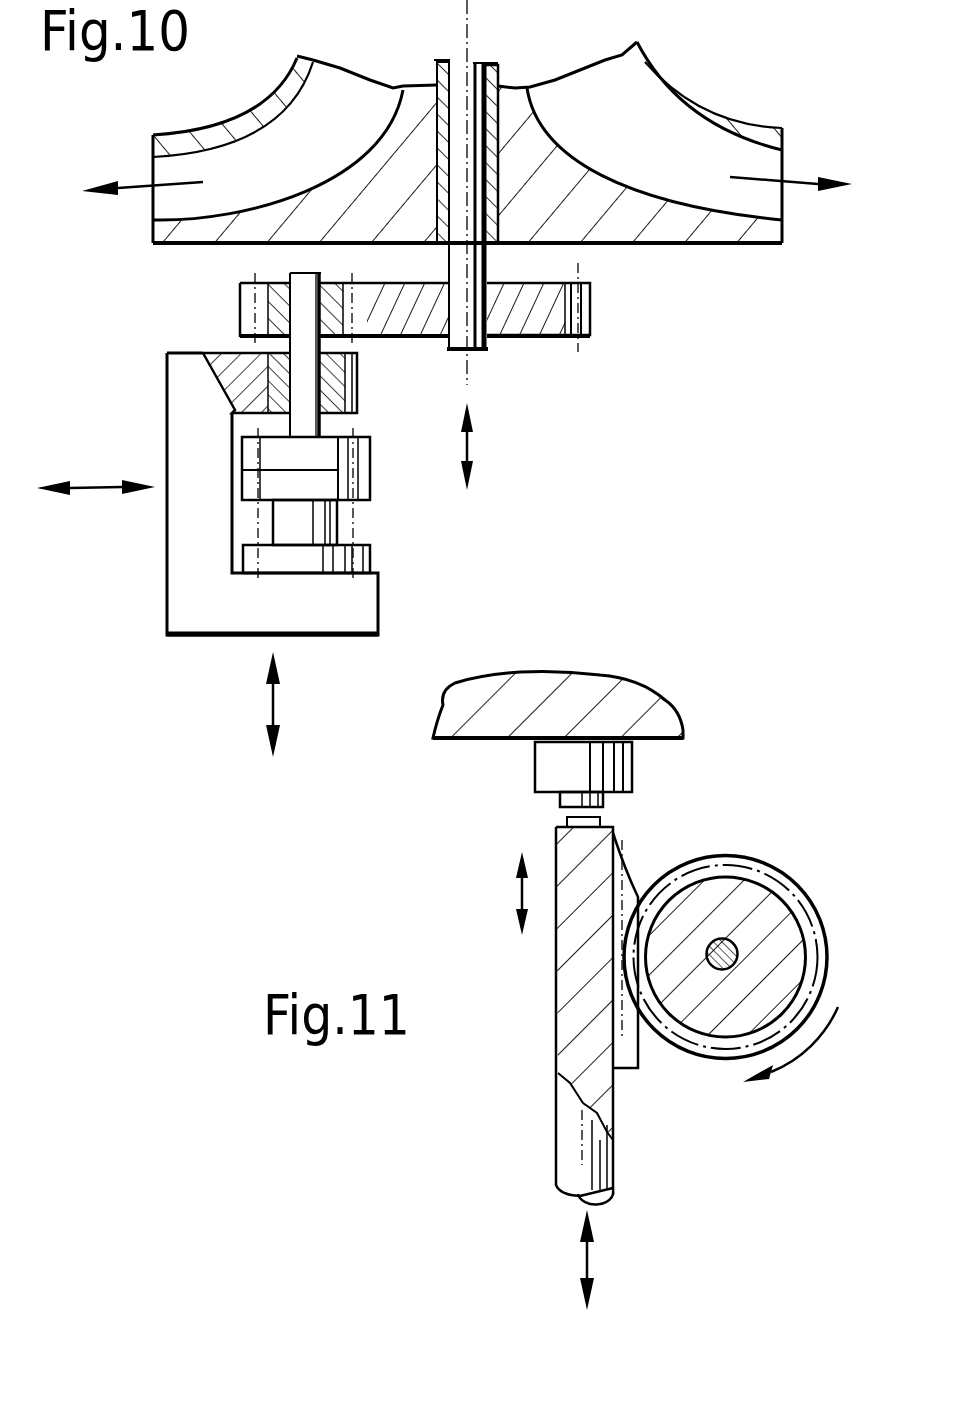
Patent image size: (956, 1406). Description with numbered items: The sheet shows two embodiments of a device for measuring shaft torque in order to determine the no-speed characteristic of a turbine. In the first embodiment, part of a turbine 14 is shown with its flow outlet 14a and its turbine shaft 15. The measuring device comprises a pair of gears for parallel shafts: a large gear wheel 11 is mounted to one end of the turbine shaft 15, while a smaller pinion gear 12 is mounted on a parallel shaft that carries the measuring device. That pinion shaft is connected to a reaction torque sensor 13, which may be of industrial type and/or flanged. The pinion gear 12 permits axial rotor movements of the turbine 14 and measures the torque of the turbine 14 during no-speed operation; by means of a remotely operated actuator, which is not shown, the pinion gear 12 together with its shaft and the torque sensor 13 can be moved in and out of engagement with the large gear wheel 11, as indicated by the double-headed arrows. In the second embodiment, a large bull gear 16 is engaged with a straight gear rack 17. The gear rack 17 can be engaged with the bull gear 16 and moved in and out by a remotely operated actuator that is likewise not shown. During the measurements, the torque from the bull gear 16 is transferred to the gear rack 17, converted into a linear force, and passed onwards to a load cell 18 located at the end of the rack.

In FIG. 10, the large gear wheel 11 is at (518, 338).
In FIG. 10, the pinion gear 12 is at (250, 312).
In FIG. 10, the reaction torque sensor 13 is at (303, 525).
In FIG. 10, the turbine 14 is at (642, 73).
In FIG. 10, the flow outlet 14a is at (272, 130).
In FIG. 10, the turbine shaft 15 is at (456, 93).
In FIG. 11, the bull gear 16 is at (817, 917).
In FIG. 11, the gear rack 17 is at (570, 1128).
In FIG. 11, the load cell 18 is at (548, 762).